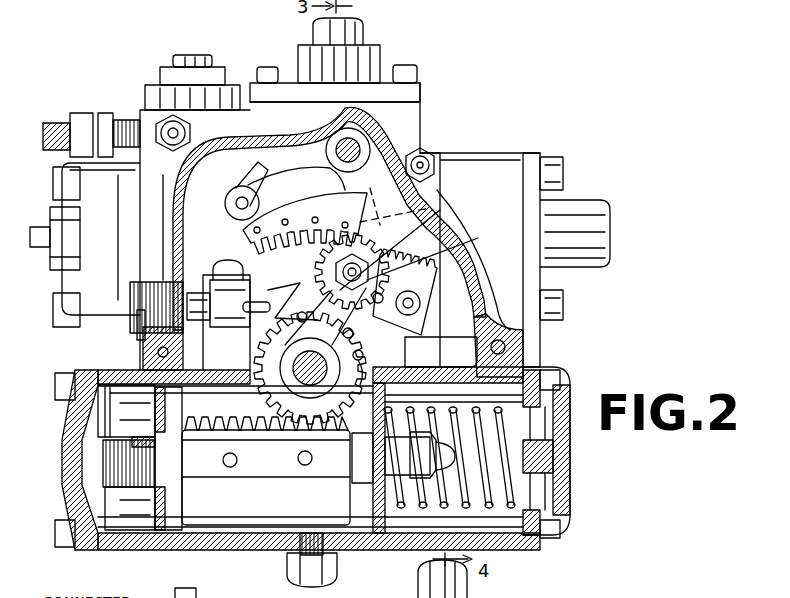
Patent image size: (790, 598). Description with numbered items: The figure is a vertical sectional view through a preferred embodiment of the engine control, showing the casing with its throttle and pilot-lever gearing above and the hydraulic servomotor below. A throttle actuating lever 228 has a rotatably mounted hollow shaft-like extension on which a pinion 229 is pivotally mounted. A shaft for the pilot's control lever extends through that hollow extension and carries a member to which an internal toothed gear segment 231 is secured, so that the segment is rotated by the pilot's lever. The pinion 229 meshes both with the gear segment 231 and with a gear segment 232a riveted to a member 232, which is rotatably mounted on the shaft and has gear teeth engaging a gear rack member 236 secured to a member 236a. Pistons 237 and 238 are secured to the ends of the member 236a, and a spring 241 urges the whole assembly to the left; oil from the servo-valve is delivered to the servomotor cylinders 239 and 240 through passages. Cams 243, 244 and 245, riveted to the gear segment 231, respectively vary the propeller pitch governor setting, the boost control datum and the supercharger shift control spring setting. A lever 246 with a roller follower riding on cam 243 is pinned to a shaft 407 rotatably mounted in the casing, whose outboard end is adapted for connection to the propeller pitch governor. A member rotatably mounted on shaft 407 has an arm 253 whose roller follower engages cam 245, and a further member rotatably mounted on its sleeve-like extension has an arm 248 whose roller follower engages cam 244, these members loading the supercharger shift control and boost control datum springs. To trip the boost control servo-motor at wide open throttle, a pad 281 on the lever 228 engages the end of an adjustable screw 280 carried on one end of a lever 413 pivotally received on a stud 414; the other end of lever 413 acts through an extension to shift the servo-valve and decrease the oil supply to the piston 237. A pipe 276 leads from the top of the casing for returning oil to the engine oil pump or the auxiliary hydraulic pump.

The pipe 276 is at (363, 33).
The shaft 407 is at (360, 147).
The lever 246 is at (278, 186).
The cam 243 is at (318, 205).
The arm 253 is at (440, 193).
The arm 248 is at (433, 207).
The pinion 229 is at (390, 250).
The internal toothed gear segment 231 is at (466, 248).
The stud 414 is at (237, 260).
The lever 413 is at (236, 300).
The adjustable screw 280 is at (258, 305).
The pad 281 is at (333, 262).
The cam 245 is at (405, 328).
The gear segment 232a is at (403, 345).
The cam 244 is at (418, 357).
The lever 228 is at (264, 343).
The member 232 is at (310, 392).
The member 236a is at (282, 468).
The spring 241 is at (553, 486).
The servomotor cylinder 240 is at (512, 530).
The piston 238 is at (372, 518).
The servomotor cylinder 239 is at (123, 525).
The piston 237 is at (160, 520).
The gear rack member 236 is at (230, 513).